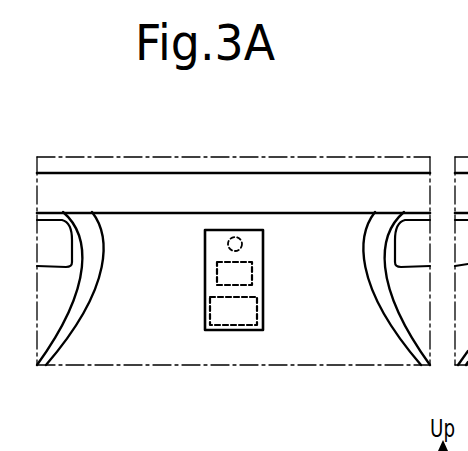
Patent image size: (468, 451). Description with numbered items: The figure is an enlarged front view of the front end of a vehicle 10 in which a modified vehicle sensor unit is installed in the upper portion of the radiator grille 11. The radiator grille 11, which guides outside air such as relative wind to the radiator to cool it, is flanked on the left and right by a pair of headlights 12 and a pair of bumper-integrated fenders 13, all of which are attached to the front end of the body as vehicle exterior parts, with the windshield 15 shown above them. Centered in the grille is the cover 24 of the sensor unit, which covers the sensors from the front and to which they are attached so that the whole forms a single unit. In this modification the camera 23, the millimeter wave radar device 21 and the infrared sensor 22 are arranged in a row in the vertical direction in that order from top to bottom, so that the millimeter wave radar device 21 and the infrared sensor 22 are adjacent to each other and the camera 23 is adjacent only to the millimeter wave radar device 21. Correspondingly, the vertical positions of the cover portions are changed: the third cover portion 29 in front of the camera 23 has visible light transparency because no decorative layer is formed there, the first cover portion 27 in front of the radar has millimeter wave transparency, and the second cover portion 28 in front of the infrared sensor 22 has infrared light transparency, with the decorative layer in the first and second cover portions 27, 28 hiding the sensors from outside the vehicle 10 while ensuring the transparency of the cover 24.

The vehicle 10 is at (92, 146).
The radiator grille 11 is at (350, 348).
The headlights 12 is at (47, 232).
The bumper-integrated fenders 13 is at (47, 328).
The windshield 15 is at (348, 164).
The millimeter wave radar device 21 is at (252, 275).
The infrared sensor 22 is at (257, 308).
The camera 23 is at (243, 244).
The cover 24 is at (250, 333).
The first cover portion 27 is at (218, 273).
The second cover portion 28 is at (222, 308).
The third cover portion 29 is at (226, 245).